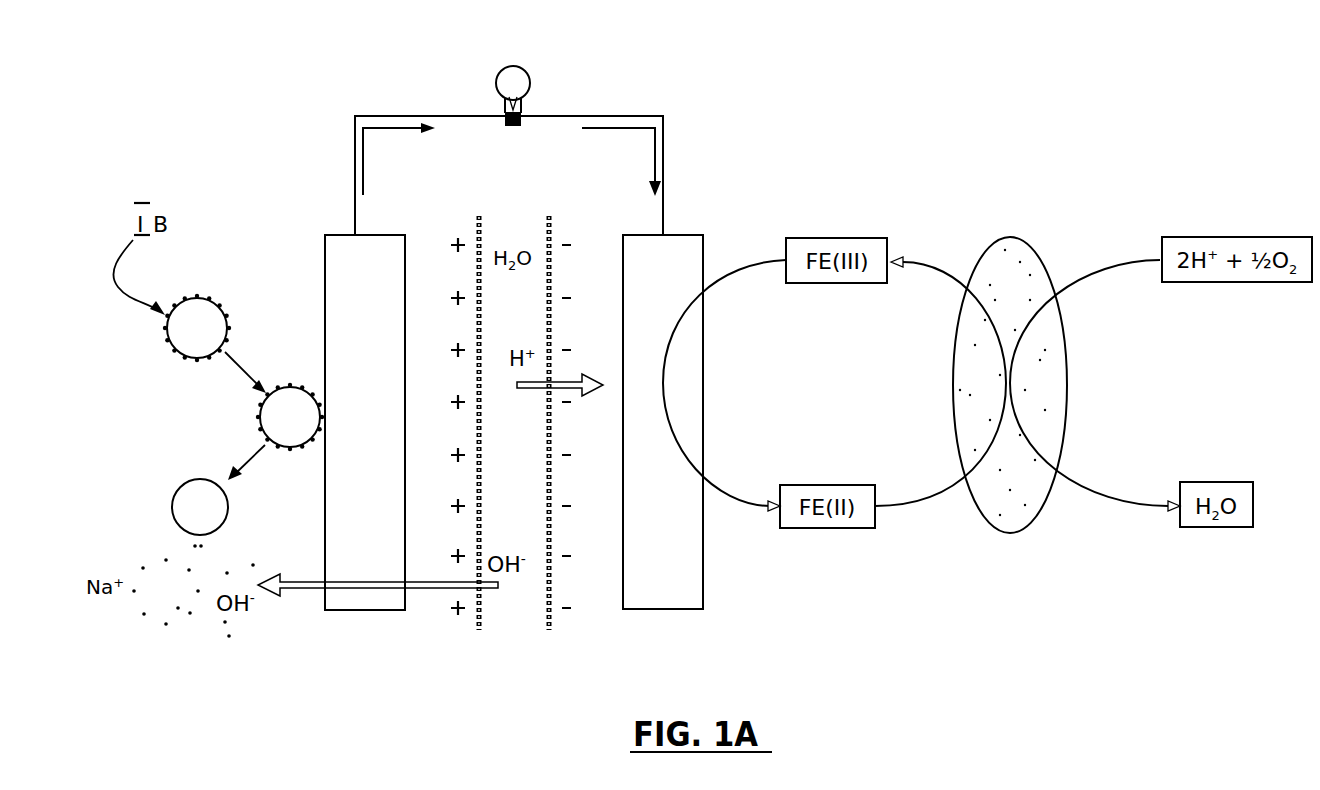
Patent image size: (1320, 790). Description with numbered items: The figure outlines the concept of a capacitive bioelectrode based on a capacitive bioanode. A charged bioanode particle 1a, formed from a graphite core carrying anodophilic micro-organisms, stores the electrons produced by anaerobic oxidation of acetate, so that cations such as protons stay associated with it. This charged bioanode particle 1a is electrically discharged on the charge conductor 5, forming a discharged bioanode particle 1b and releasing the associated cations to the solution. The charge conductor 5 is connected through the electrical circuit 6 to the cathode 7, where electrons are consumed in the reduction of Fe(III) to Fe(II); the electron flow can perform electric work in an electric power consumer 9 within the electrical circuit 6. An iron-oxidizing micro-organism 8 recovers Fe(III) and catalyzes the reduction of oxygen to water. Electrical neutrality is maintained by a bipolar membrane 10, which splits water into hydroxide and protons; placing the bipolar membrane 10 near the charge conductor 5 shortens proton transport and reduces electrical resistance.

The charged bioanode particle 1a is at (182, 343).
The discharged bioanode particle 1b is at (215, 504).
The charge conductor 5 is at (345, 287).
The electrical circuit 6 is at (355, 160).
The cathode 7 is at (683, 550).
The iron-oxidizing micro-organism 8 is at (1000, 255).
The electric power consumer 9 is at (522, 80).
The bipolar membrane 10 is at (515, 607).